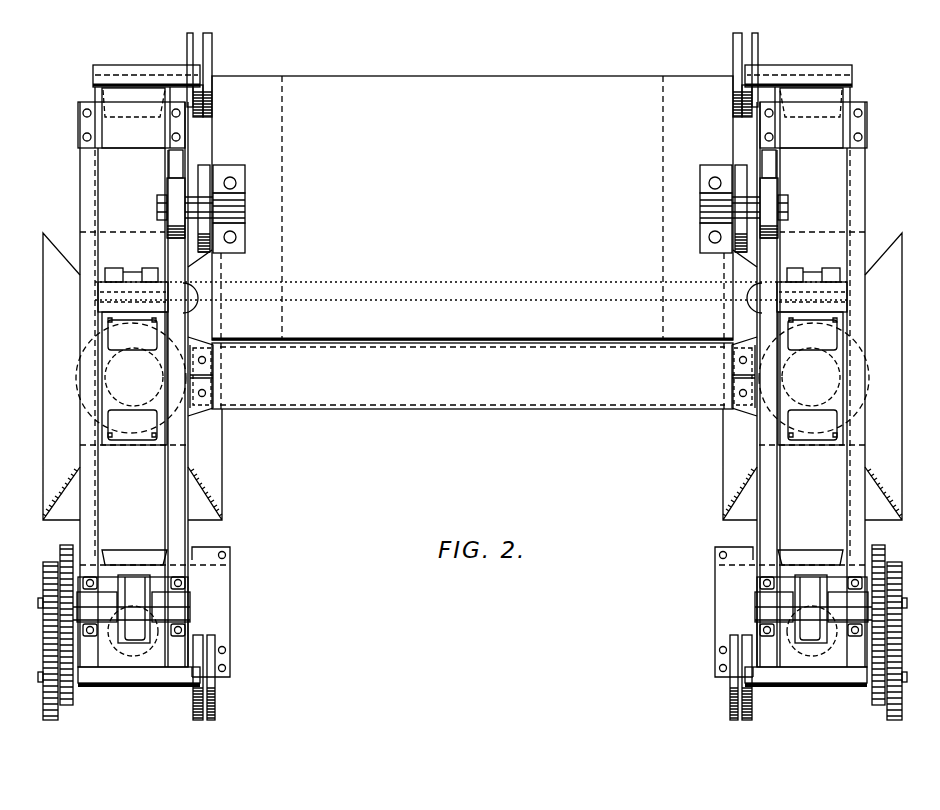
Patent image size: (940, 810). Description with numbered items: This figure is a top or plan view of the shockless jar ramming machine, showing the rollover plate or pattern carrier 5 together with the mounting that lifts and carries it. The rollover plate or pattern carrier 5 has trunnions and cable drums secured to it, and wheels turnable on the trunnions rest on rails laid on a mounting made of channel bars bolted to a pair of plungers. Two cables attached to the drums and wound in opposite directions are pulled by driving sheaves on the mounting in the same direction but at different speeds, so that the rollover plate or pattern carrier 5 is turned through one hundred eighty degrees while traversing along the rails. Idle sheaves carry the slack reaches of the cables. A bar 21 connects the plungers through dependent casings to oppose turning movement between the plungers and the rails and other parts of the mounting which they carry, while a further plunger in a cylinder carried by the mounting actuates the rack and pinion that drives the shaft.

The rollover plate or pattern carrier 5 is at (467, 76).
The bar 21 is at (402, 409).